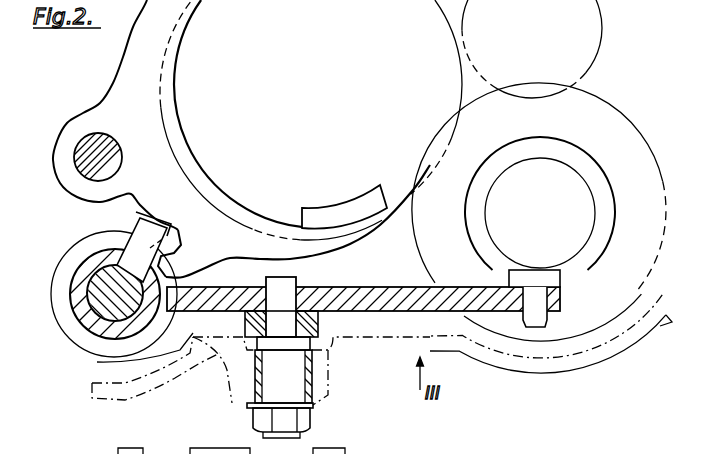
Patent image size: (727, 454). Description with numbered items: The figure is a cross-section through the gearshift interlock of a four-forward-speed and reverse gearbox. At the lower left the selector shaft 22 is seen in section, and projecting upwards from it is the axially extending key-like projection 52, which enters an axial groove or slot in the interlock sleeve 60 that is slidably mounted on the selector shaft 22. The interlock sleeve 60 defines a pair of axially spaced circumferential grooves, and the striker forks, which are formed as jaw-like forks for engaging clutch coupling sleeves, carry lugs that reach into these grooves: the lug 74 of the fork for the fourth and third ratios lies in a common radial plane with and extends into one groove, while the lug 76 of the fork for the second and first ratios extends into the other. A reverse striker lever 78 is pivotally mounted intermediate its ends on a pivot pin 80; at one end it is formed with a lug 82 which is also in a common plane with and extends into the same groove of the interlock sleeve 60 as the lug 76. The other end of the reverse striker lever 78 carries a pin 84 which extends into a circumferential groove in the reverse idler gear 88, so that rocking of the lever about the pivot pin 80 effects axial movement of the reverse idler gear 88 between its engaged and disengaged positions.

The selector shaft 22 is at (113, 310).
The axially extending key-like projection 52 is at (115, 265).
The interlock sleeve 60 is at (102, 352).
The lug 74 is at (160, 227).
The lug 76 is at (174, 265).
The reverse striker lever 78 is at (380, 298).
The pivot pin 80 is at (286, 293).
The lug 82 is at (178, 311).
The pin 84 is at (540, 318).
The reverse idler gear 88 is at (610, 133).